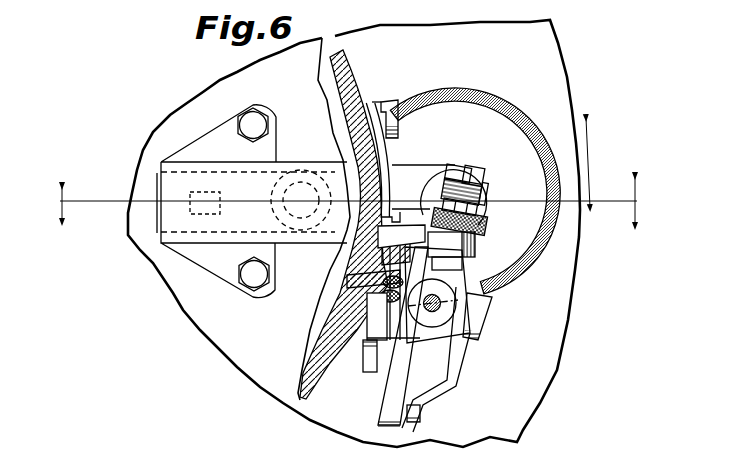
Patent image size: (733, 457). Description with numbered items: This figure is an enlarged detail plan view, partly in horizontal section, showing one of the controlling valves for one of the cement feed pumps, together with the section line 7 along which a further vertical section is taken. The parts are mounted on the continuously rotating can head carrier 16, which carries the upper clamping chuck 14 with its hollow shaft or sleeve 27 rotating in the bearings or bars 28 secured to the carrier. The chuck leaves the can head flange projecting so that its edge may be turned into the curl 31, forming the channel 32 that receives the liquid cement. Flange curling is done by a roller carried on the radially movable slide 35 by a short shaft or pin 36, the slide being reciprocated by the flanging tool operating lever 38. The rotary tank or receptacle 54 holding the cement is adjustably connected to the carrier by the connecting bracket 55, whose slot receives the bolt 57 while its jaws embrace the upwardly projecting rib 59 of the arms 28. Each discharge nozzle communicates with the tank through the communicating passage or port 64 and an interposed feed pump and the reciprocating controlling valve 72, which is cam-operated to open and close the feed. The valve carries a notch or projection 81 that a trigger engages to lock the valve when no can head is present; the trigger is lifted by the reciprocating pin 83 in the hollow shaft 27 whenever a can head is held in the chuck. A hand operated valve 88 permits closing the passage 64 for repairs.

The section line 7— 7 is at (348, 201).
The upper clamping chuck 14 is at (453, 178).
The can head carrier 16 is at (354, 233).
The hollow shaft or sleeve 27 is at (441, 178).
The bearings or bars 28 is at (275, 242).
The curl 31 is at (545, 258).
The channel 32 is at (601, 192).
The radially movable slide 35 is at (158, 233).
The short shaft or pin 36 is at (301, 200).
The flanging tool operating lever 38 is at (220, 213).
The rotary tank or receptacle 54 is at (335, 52).
The connecting bracket 55 is at (390, 160).
The bolt 57 is at (392, 110).
The upwardly projecting rib 59 is at (404, 197).
The communicating passage or port 64 is at (373, 285).
The controlling valve 72 is at (481, 168).
The notch or projection 81 is at (487, 185).
The reciprocating pin 83 is at (432, 221).
The hand operated valve 88 is at (374, 348).